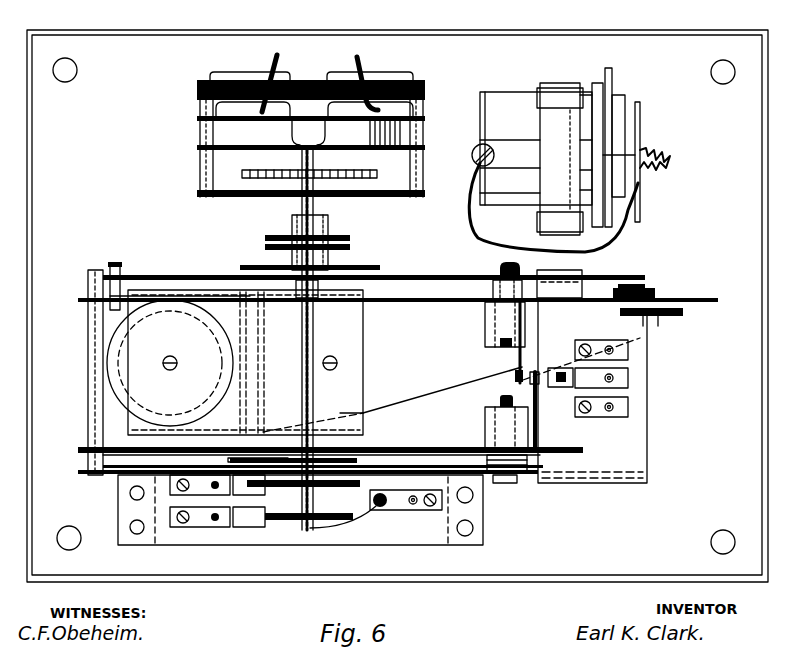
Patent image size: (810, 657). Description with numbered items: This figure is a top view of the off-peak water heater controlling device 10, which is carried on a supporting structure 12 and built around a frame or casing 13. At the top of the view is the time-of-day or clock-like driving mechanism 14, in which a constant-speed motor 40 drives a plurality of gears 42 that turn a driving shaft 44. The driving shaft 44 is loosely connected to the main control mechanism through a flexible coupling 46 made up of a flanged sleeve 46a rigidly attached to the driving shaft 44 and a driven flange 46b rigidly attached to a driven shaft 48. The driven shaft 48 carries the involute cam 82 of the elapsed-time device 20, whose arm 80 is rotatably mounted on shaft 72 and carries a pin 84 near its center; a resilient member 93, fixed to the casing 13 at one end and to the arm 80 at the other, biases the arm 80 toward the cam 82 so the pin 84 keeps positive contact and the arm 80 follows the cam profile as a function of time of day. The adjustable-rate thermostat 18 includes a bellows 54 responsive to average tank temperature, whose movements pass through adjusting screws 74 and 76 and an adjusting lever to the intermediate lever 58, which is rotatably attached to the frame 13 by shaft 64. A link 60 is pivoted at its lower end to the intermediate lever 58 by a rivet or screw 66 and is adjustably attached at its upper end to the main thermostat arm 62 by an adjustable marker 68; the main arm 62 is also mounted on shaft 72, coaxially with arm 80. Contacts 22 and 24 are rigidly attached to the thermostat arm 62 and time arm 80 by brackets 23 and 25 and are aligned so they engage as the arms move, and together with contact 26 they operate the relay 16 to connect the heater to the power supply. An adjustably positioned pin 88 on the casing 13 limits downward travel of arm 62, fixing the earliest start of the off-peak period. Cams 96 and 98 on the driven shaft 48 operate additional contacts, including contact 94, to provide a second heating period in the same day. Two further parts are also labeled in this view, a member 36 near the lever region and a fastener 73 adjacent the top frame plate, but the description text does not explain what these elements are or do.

The off-peak water heater controlling device 10 is at (88, 21).
The supporting structure 12 is at (110, 30).
The frame 13 is at (110, 476).
The time-of-day mechanism 14 is at (200, 117).
The relay 16 is at (640, 112).
The adjustable-rate thermostat 18 is at (418, 305).
The elapsed-time device 20 is at (440, 452).
The contact 22 is at (522, 378).
The bracket 23 is at (525, 345).
The contact 24 is at (537, 380).
The bracket 25 is at (540, 424).
The contact 26 is at (552, 368).
The lever 36 is at (365, 414).
The constant-speed motor 40 is at (242, 72).
The gears 42 is at (250, 168).
The driving shaft 44 is at (300, 205).
The flexible coupling 46 is at (268, 238).
The flanged sleeve 46a is at (342, 236).
The driven flange 46b is at (350, 247).
The driven shaft 48 is at (330, 282).
The bellows 54 is at (118, 360).
The intermediate lever 58 is at (444, 380).
The link 60 is at (655, 290).
The main thermostat arm 62 is at (455, 298).
The shaft 64 is at (238, 280).
The rivet or screw 66 is at (640, 284).
The adjustable marker 68 is at (660, 318).
The shaft 72 is at (502, 342).
The screw 73 is at (518, 272).
The adjusting screw 74 is at (172, 358).
The adjusting screw 76 is at (332, 356).
The arm 80 is at (374, 452).
The involute cam 82 is at (357, 461).
The pin 84 is at (298, 450).
The pin 88 is at (117, 270).
The resilient member 93 is at (577, 453).
The contact 94 is at (384, 508).
The cam 96 is at (275, 520).
The cam 98 is at (258, 488).